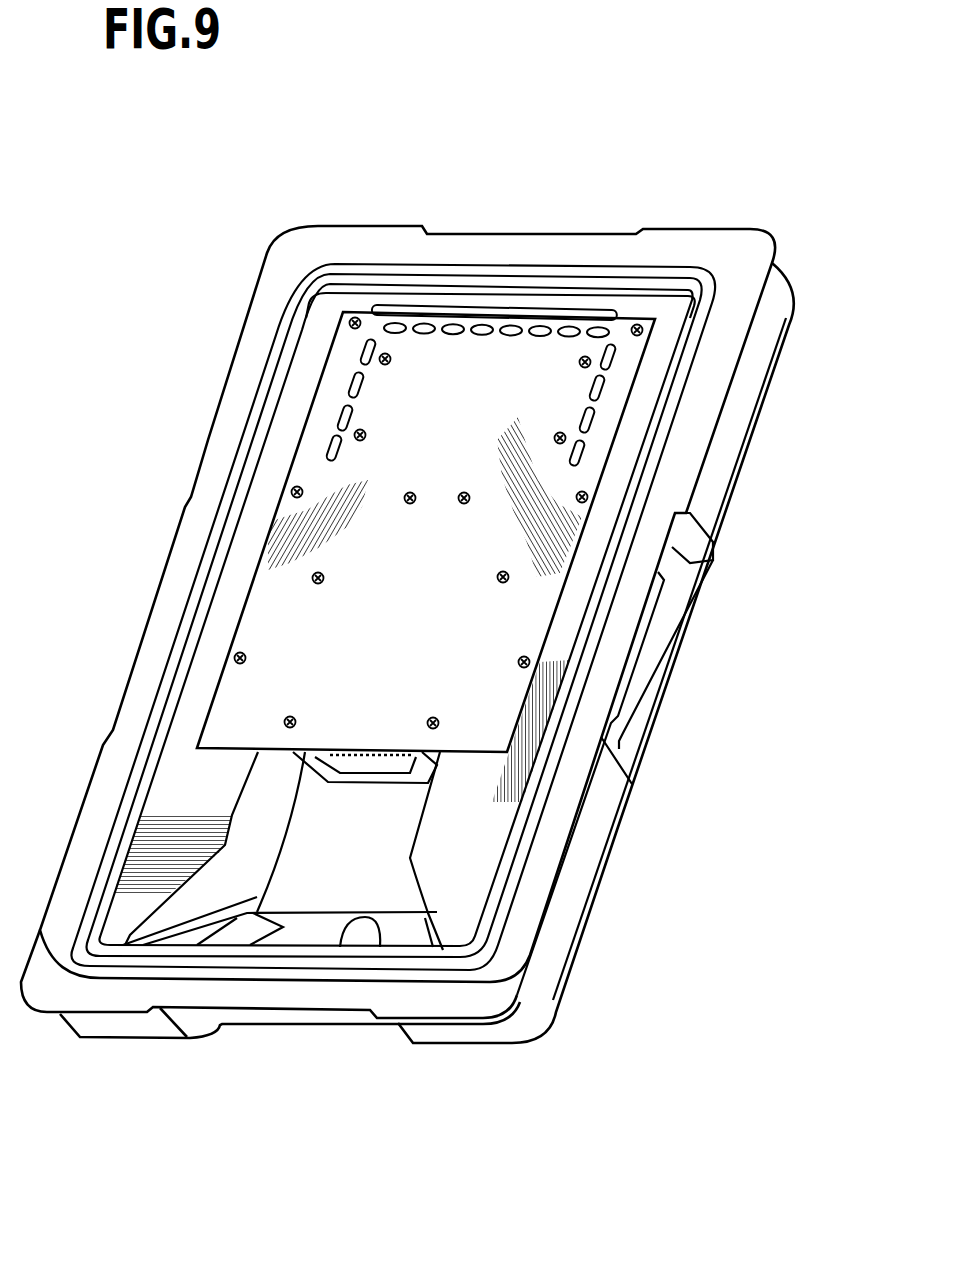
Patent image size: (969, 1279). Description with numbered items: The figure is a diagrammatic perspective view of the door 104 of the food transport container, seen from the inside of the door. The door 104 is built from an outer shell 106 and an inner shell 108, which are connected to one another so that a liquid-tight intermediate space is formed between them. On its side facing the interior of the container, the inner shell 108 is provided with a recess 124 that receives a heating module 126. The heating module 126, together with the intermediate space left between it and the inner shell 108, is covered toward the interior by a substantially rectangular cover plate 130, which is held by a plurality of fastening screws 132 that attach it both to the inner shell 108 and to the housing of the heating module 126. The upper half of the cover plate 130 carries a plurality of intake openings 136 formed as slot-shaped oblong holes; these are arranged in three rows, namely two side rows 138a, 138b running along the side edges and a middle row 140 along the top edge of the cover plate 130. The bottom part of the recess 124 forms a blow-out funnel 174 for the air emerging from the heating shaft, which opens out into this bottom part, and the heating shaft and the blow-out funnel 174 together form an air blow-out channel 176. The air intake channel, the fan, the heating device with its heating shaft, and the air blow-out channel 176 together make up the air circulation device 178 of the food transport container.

The door 104 is at (694, 215).
The outer shell 106 is at (580, 880).
The inner shell 108 is at (190, 805).
The recess 124 is at (358, 831).
The heating module 126 is at (438, 772).
The cover plate 130 is at (431, 565).
The fastening screws 132 is at (246, 658).
The intake openings 136 is at (420, 325).
The side row 138a is at (334, 387).
The side row 138b is at (606, 422).
The middle row 140 is at (516, 318).
The blow-out funnel 174 is at (345, 873).
The air blow-out channel 176 is at (393, 880).
The air circulation device 178 is at (457, 306).